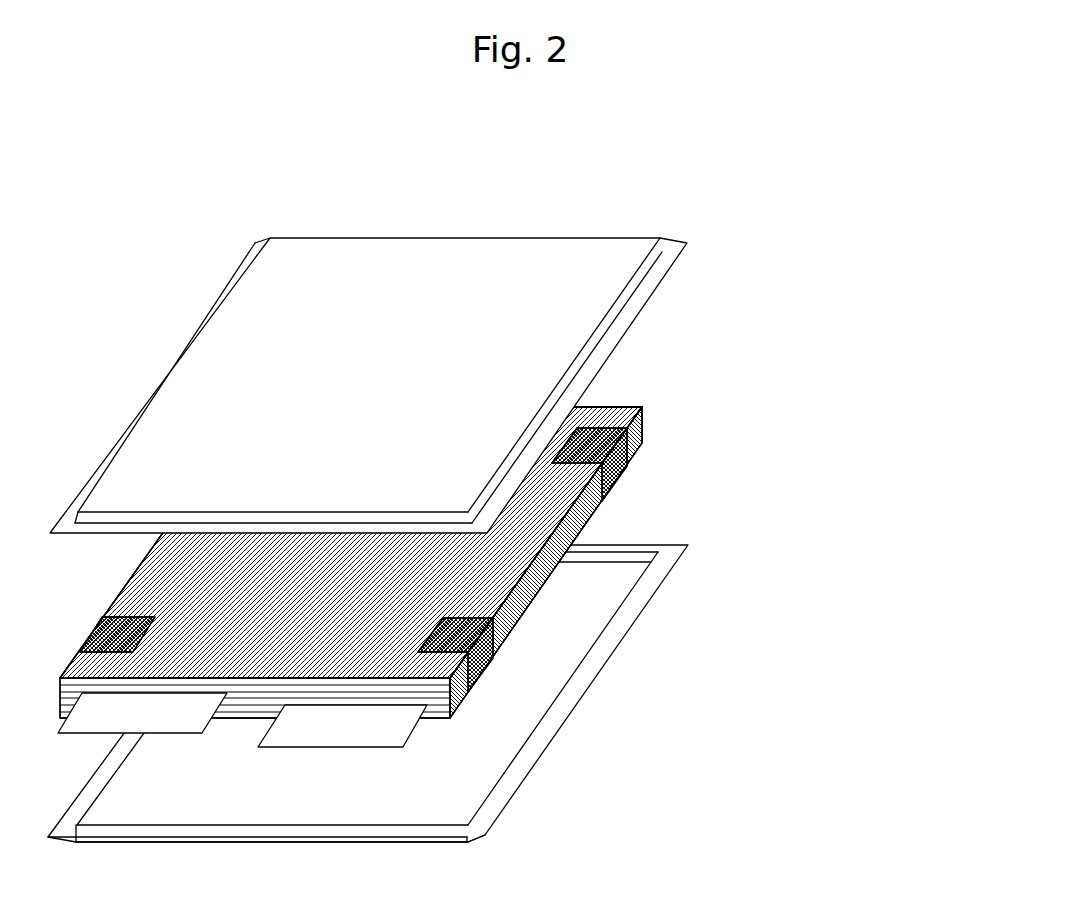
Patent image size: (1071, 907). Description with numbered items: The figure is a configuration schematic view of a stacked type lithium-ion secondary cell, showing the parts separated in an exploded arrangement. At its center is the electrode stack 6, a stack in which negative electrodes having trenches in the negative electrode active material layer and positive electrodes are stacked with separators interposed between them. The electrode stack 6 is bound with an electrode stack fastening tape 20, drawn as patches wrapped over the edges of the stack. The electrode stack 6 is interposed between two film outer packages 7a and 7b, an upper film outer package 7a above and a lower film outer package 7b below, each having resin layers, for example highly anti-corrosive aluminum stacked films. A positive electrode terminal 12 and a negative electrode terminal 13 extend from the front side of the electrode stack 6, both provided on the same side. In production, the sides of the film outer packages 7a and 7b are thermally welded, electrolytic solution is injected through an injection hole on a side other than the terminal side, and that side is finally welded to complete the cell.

The film outer package 7a is at (667, 282).
The film outer package 7b is at (585, 676).
The electrode stack 6 is at (625, 405).
The electrode stack fastening tape 20 is at (638, 450).
The positive electrode terminal 12 is at (176, 723).
The negative electrode terminal 13 is at (370, 723).